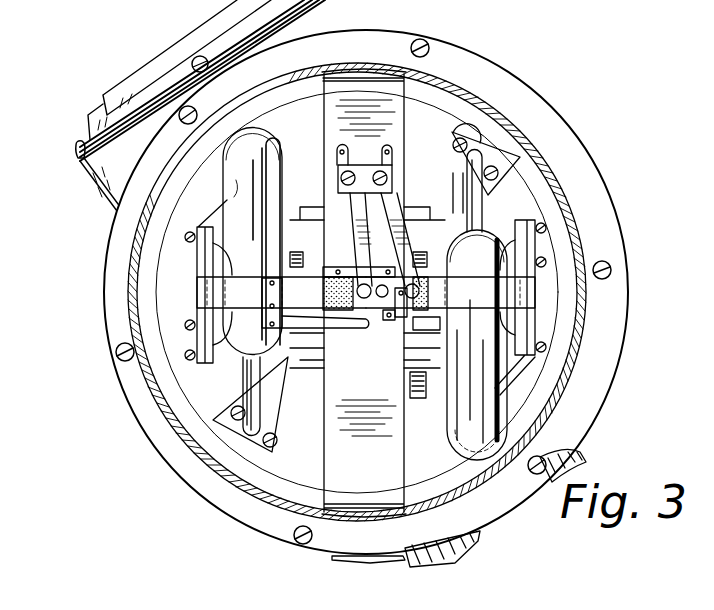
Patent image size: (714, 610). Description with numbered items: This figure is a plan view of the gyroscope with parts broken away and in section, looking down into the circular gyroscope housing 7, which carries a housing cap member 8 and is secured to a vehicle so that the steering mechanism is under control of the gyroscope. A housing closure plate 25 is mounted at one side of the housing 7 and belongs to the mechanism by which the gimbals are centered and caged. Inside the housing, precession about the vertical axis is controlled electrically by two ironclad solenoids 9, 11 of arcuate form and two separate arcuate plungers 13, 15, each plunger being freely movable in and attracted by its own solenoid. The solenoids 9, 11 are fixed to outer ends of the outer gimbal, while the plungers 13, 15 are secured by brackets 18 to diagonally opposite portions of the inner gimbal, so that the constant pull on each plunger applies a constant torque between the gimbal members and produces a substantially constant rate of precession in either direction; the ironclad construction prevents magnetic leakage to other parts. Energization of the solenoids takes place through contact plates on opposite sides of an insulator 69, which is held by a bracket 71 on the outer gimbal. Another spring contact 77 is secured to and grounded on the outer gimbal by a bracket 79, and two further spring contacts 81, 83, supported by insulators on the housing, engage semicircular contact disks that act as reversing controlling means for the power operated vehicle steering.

The gyroscope housing 7 is at (452, 92).
The housing cap member 8 is at (137, 262).
The ironclad solenoid 9 is at (255, 205).
The ironclad solenoid 11 is at (465, 392).
The arcuate plunger 13 is at (253, 387).
The arcuate plunger 15 is at (473, 187).
The bracket 18 is at (453, 147).
The housing closure plate 25 is at (146, 70).
The insulator 69 is at (328, 280).
The bracket 71 is at (527, 288).
The spring contact 77 is at (333, 337).
The bracket 79 is at (210, 292).
The spring contact 81 is at (367, 233).
The spring contact 83 is at (400, 212).